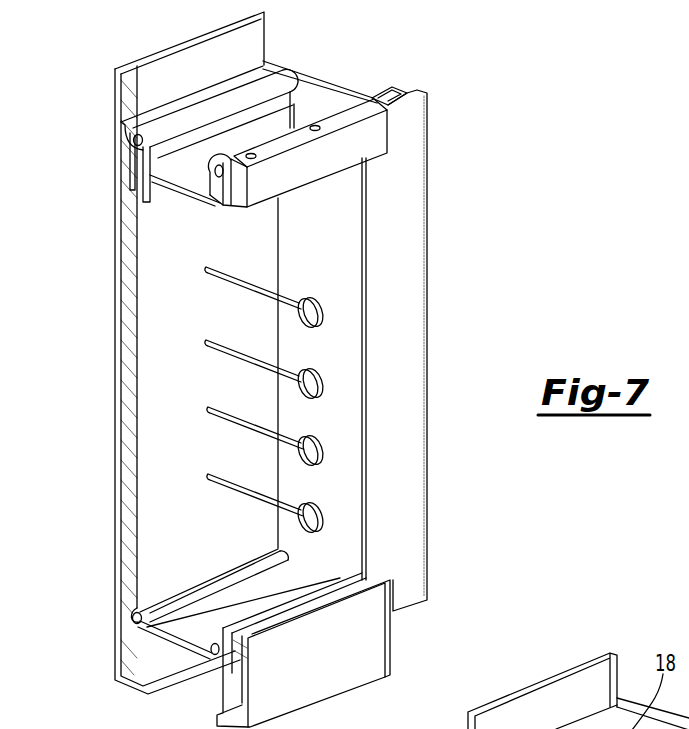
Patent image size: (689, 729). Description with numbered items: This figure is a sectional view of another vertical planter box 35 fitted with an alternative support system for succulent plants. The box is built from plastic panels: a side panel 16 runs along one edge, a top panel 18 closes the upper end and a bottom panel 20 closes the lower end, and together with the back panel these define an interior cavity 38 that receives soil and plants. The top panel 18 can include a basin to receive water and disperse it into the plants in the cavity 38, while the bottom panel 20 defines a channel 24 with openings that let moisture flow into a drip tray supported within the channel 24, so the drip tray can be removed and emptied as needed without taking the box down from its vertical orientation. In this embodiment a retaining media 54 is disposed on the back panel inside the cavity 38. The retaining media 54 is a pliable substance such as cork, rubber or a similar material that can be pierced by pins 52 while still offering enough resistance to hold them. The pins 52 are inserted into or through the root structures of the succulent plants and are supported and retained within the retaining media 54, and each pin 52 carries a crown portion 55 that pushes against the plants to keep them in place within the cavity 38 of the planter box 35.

The side panel 16 is at (408, 200).
The top panel 18 is at (275, 128).
The bottom panel 20 is at (370, 652).
The channel 24 is at (152, 638).
The vertical planter box 35 is at (477, 133).
The interior cavity 38 is at (307, 255).
The pins 52 is at (275, 401).
The retaining media 54 is at (162, 522).
The crown portion 55 is at (313, 385).